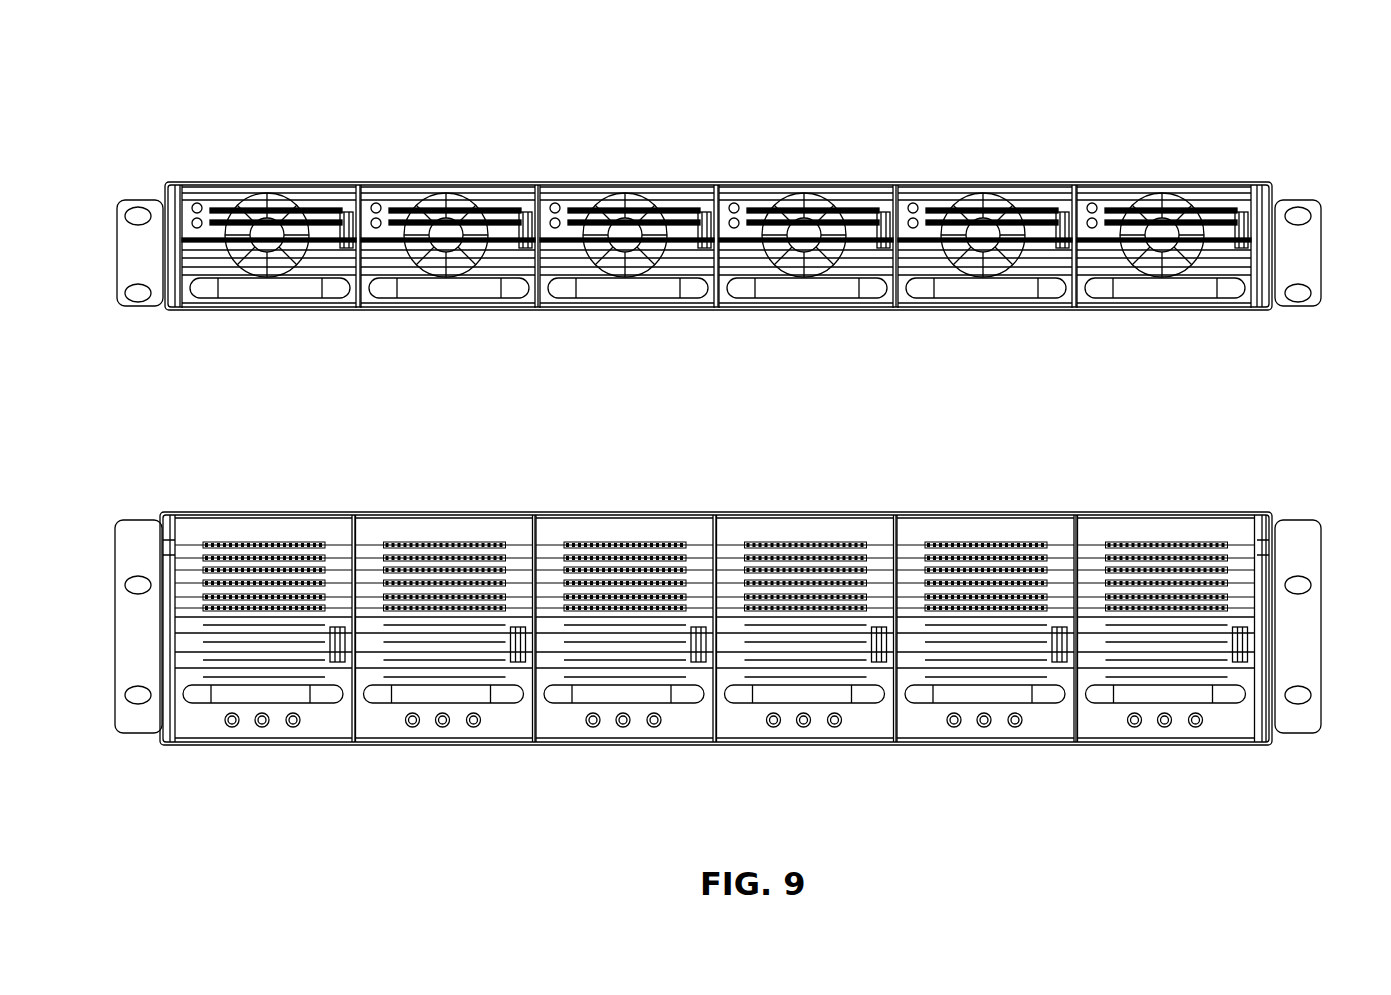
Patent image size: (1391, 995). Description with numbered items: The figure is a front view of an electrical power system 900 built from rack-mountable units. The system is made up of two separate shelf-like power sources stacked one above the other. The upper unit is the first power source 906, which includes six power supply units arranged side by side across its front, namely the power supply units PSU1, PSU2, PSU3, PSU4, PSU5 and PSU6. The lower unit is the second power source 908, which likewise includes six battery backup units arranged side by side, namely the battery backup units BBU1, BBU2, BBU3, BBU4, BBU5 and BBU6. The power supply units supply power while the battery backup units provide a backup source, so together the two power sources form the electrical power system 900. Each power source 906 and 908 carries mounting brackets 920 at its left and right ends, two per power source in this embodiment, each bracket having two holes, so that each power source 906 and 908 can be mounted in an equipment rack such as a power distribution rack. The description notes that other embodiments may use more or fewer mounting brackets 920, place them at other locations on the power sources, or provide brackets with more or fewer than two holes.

The electrical power system 900 is at (148, 44).
The first power source 906 is at (124, 188).
The second power source 908 is at (137, 500).
The mounting brackets 920 is at (130, 262).
The power supply unit PSU1 is at (255, 188).
The power supply unit PSU2 is at (420, 188).
The power supply unit PSU3 is at (585, 188).
The power supply unit PSU4 is at (767, 188).
The power supply unit PSU5 is at (950, 188).
The power supply unit PSU6 is at (1133, 188).
The battery backup unit BBU1 is at (295, 530).
The battery backup unit BBU2 is at (450, 530).
The battery backup unit BBU3 is at (606, 530).
The battery backup unit BBU4 is at (813, 530).
The battery backup unit BBU5 is at (976, 530).
The battery backup unit BBU6 is at (1163, 530).